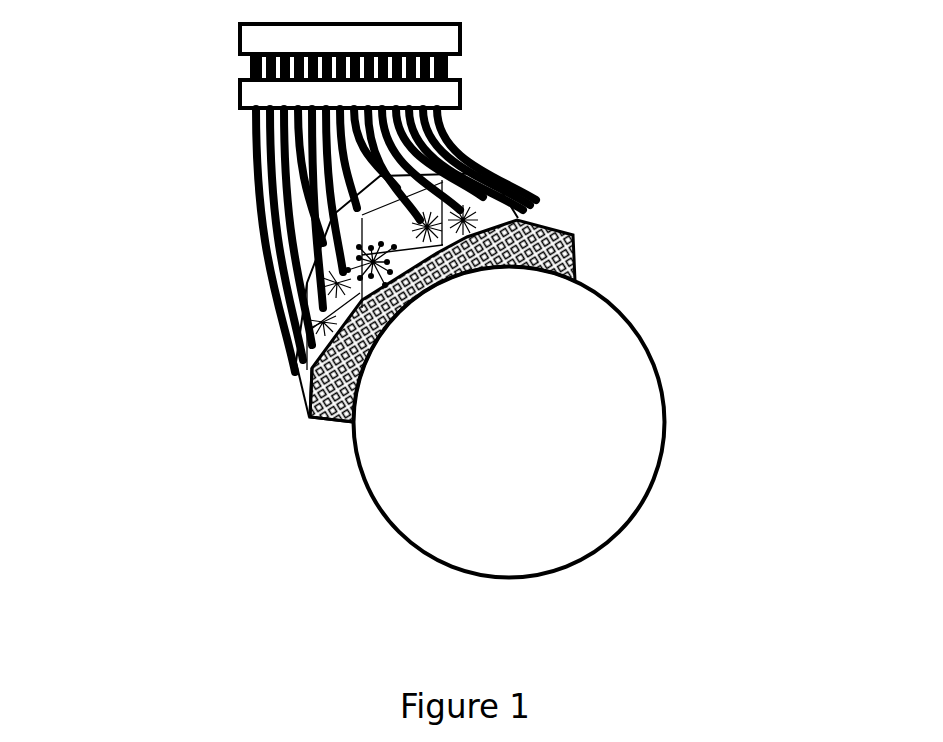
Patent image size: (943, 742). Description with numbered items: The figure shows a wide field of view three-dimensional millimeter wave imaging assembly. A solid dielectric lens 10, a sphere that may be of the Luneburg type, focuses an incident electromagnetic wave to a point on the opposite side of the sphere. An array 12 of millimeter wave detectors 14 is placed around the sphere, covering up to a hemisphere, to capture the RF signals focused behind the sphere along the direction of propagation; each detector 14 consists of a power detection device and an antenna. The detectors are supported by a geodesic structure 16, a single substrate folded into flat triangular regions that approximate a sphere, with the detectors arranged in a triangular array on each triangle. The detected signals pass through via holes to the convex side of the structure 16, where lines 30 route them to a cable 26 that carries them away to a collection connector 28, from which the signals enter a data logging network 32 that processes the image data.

The solid dielectric lens 10 is at (668, 417).
The array of millimeter wave detectors 12 is at (332, 413).
The millimeter wave detector 14 is at (556, 257).
The geodesic structure 16 is at (554, 204).
The cable 26 is at (256, 224).
The collection connector 28 is at (350, 94).
The lines 30 is at (366, 284).
The data logging network 32 is at (350, 51).